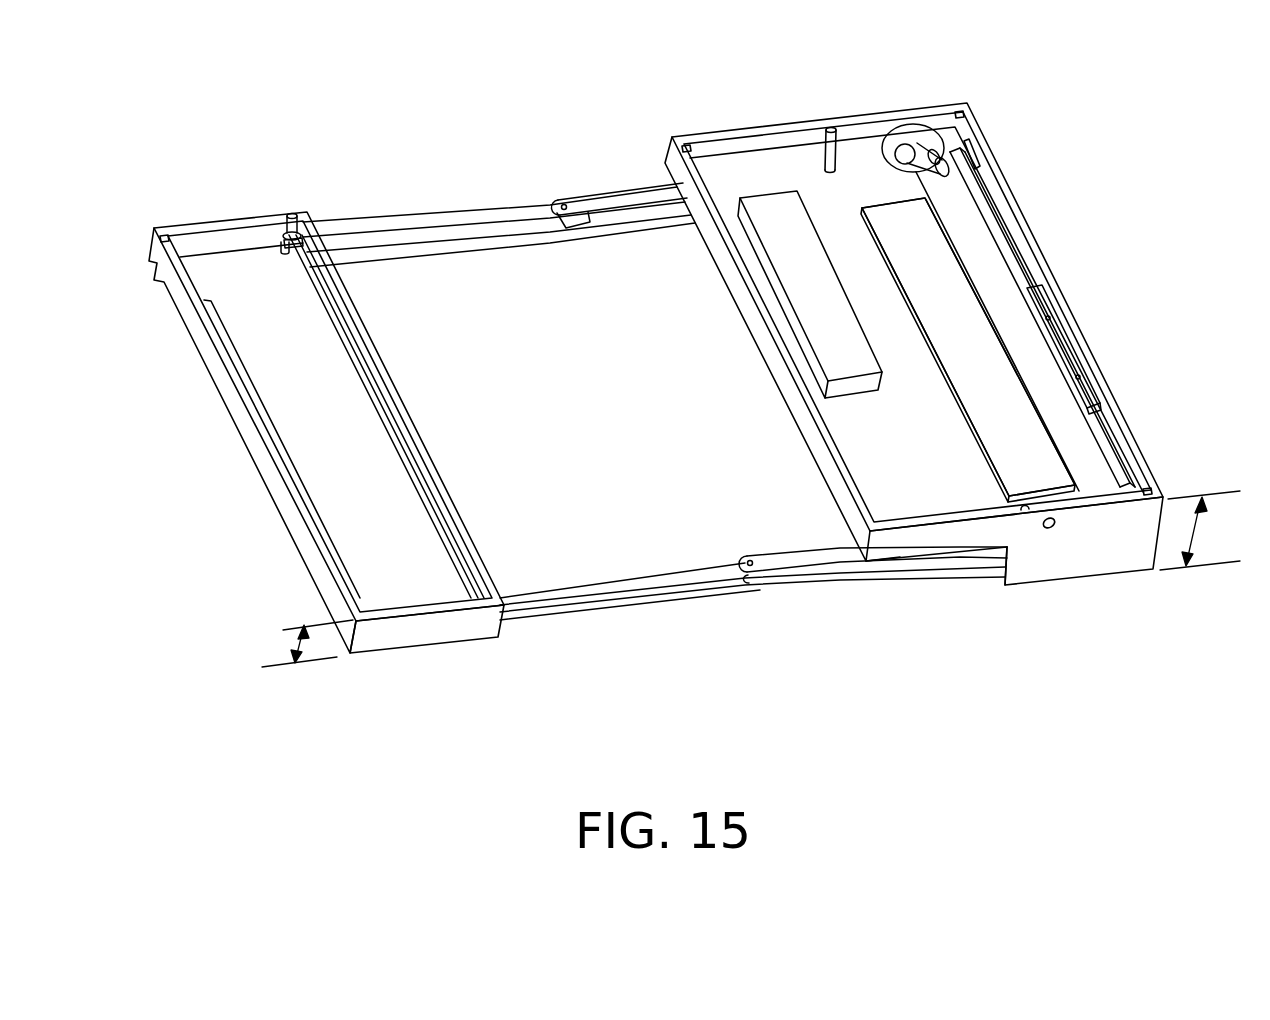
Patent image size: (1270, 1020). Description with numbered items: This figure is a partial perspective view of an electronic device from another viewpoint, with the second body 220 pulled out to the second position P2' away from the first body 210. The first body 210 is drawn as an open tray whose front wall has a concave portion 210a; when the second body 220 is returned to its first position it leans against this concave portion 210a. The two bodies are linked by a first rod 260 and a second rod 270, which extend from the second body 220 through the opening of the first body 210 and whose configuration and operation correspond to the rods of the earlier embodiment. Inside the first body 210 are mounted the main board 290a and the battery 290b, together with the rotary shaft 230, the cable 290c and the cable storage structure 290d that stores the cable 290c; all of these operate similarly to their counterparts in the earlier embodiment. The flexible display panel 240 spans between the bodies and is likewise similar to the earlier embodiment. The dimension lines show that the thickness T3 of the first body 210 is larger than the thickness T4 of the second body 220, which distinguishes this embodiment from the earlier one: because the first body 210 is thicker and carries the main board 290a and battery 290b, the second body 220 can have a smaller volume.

The first body 210 is at (1103, 553).
The concave portion 210a is at (957, 553).
The second body 220 is at (422, 628).
The rotary shaft 230 is at (890, 222).
The flexible display panel 240 is at (705, 527).
The first rod 260 is at (433, 218).
The second rod 270 is at (623, 196).
The main board 290a is at (890, 223).
The battery 290b is at (767, 202).
The cable 290c is at (942, 153).
The cable storage structure 290d is at (1023, 252).
The thickness of the first body T3 is at (1201, 530).
The thickness of the second body T4 is at (302, 643).
The second position P2' is at (340, 735).